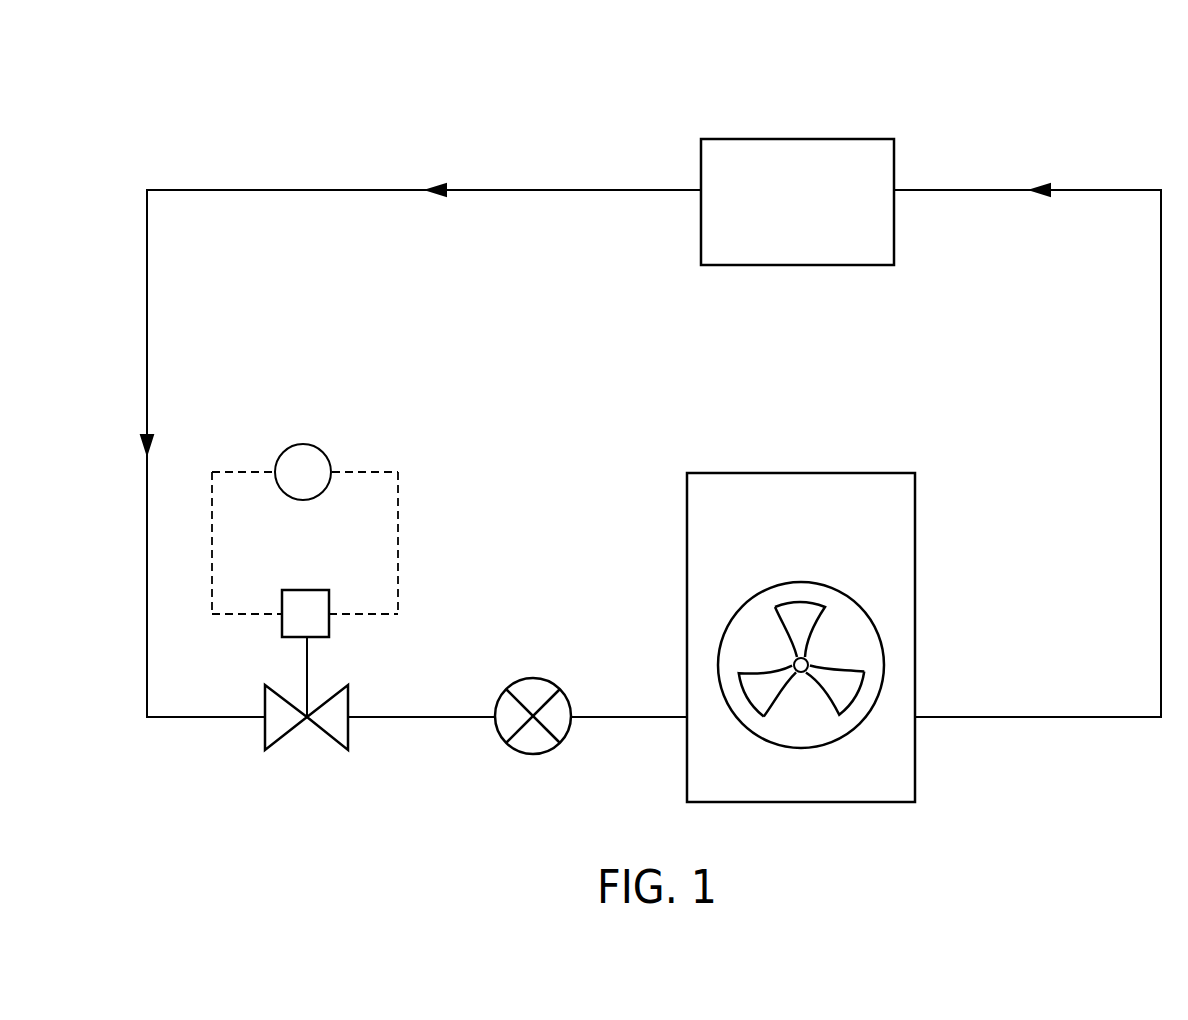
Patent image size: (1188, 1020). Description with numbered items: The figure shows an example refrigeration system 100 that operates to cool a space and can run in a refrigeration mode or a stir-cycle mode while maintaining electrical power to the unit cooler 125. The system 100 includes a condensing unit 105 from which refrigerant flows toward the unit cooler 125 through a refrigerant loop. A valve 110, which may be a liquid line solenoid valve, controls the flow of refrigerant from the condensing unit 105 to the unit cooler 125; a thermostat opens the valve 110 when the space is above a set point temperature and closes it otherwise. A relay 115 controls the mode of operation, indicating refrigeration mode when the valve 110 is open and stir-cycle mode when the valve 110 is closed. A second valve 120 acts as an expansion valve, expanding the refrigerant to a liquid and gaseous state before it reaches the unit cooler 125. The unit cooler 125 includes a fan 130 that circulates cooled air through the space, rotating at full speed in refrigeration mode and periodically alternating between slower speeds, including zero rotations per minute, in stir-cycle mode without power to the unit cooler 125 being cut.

The refrigeration system 100 is at (676, 72).
The condensing unit 105 is at (894, 165).
The valve 110 is at (287, 733).
The relay 115 is at (323, 447).
The valve 120 is at (527, 755).
The unit cooler 125 is at (915, 523).
The fan 130 is at (858, 725).